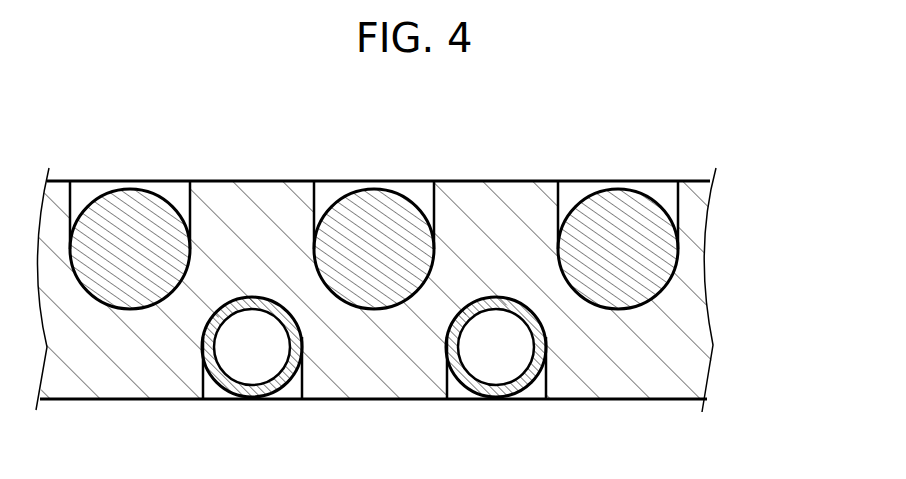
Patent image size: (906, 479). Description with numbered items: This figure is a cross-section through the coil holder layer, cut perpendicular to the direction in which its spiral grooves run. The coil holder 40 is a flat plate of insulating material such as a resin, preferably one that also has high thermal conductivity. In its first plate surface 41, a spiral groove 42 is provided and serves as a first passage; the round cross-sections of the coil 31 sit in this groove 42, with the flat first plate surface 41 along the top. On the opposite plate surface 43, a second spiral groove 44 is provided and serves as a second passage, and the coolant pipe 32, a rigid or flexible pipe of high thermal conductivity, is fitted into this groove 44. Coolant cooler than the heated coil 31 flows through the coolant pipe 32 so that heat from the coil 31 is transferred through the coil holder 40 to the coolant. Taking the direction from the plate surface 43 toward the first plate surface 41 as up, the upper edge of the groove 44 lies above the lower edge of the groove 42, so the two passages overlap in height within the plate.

The coil 31 is at (125, 225).
The coolant pipe 32 is at (236, 388).
The coil holder 40 is at (692, 286).
The first plate surface 41 is at (493, 181).
The groove 42 is at (177, 193).
The plate surface 43 is at (665, 399).
The groove 44 is at (289, 393).